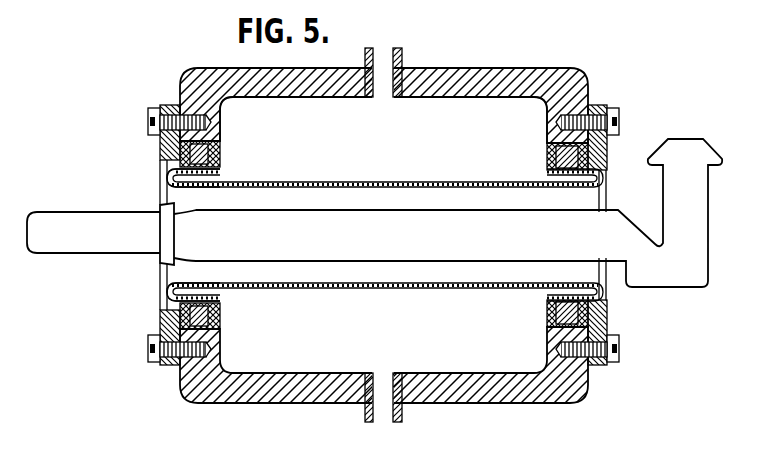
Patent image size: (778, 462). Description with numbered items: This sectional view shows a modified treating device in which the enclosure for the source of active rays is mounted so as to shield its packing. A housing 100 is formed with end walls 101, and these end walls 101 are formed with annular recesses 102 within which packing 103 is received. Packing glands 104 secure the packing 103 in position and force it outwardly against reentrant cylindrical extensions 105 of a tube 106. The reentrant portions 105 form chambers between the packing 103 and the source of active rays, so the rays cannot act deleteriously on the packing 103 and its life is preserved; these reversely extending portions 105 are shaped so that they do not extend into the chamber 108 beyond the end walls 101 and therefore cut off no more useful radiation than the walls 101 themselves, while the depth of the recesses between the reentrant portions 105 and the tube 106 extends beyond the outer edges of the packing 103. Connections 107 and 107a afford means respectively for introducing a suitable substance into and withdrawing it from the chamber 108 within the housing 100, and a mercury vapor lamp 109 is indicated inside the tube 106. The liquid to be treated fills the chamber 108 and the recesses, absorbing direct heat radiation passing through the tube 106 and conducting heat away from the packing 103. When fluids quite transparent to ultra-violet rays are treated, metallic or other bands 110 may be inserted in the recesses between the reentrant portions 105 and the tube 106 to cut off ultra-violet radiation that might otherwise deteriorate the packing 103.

The housing 100 is at (465, 82).
The end walls 101 is at (210, 127).
The annular recesses 102 is at (212, 145).
The packing 103 is at (212, 162).
The packing glands 104 is at (163, 148).
The reentrant cylindrical extensions 105 is at (220, 168).
The tube 106 is at (350, 188).
The connection 107 is at (381, 58).
The connection 107a is at (380, 410).
The chamber 108 is at (508, 115).
The mercury vapor lamp 109 is at (656, 272).
The bands 110 is at (218, 290).